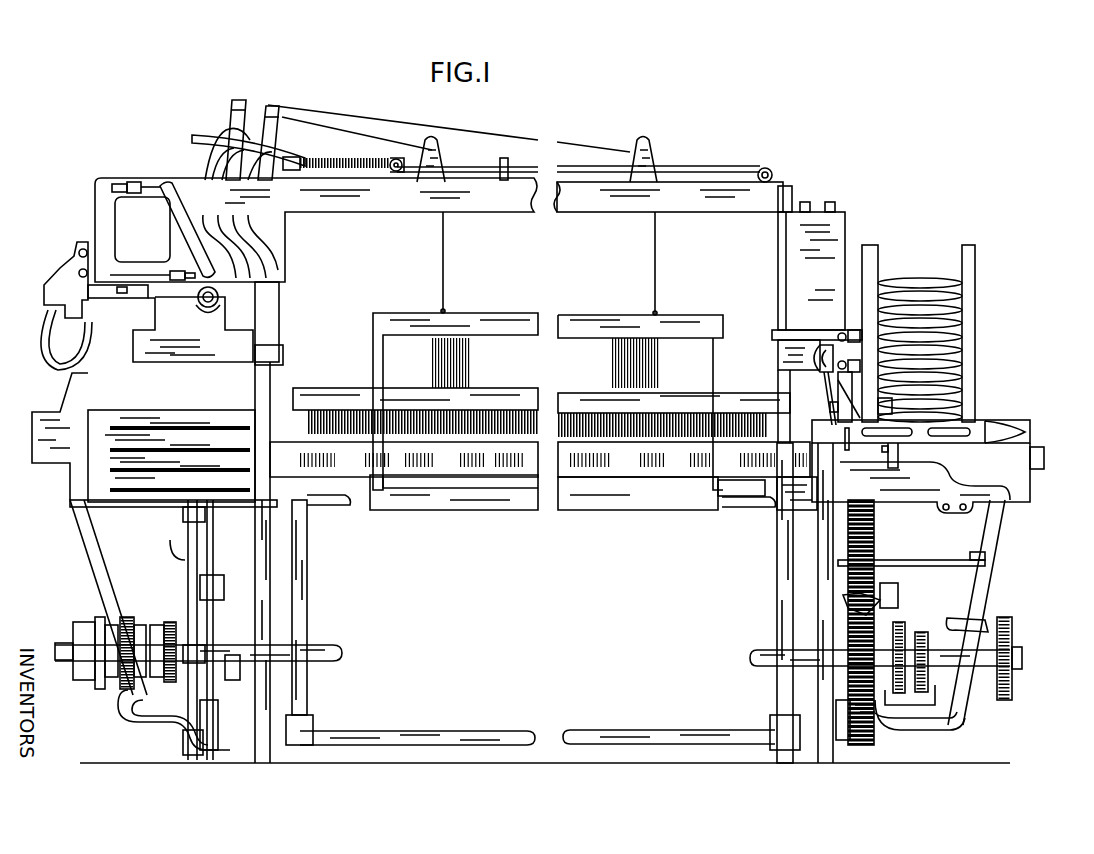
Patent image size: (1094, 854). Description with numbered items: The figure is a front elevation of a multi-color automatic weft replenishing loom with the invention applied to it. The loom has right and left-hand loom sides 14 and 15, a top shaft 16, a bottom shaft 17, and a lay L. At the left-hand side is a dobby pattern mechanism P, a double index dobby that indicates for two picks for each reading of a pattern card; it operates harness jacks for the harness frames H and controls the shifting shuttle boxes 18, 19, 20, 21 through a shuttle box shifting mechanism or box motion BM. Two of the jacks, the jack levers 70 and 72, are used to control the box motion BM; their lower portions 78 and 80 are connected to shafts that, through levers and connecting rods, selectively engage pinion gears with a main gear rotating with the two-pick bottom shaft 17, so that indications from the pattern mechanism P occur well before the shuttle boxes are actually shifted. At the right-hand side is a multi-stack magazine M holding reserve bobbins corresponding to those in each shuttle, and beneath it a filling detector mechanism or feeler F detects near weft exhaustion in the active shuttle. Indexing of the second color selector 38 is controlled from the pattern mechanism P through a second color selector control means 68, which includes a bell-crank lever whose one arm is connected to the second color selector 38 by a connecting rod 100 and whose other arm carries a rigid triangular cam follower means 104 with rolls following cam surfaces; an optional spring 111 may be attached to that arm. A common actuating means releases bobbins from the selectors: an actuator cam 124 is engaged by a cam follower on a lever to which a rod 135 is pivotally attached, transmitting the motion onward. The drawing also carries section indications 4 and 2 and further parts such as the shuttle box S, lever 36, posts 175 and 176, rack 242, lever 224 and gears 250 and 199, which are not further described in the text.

The connecting rod 100 is at (468, 165).
The cam follower means 104 is at (230, 128).
The second color selector control means 68 is at (266, 102).
The jack lever 72 is at (230, 149).
The jack lever 70 is at (236, 168).
The spring 111 is at (342, 156).
The lower portion of jack 72 80 is at (250, 226).
The lower portion of jack 70 78 is at (255, 240).
The dobby pattern mechanism P is at (58, 208).
The shifting shuttle box 18 is at (118, 424).
The shifting shuttle box 19 is at (140, 443).
The shifting shuttle box 20 is at (162, 460).
The shifting shuttle box 21 is at (140, 478).
The shuttle box shifting mechanism BM is at (160, 610).
The bottom shaft 17 is at (338, 650).
The top shaft 16 is at (349, 506).
The left-hand loom side 15 is at (280, 695).
The right-hand loom side 14 is at (830, 687).
The harness frames H is at (370, 308).
The lay L is at (578, 456).
The second color selector 38 is at (848, 318).
The section line 4 is at (768, 346).
The lever 36 is at (826, 378).
The magazine post 175 is at (870, 278).
The magazine post 176 is at (968, 348).
The multi-stack magazine M is at (984, 296).
The shuttle box S is at (990, 428).
The feeler F is at (903, 450).
The rack 242 is at (848, 622).
The rod 135 is at (845, 548).
The lever 224 is at (874, 596).
The gear 250 is at (903, 640).
The actuator cam 124 is at (925, 640).
The gear 199 is at (1010, 640).
The section line 2 is at (1052, 543).